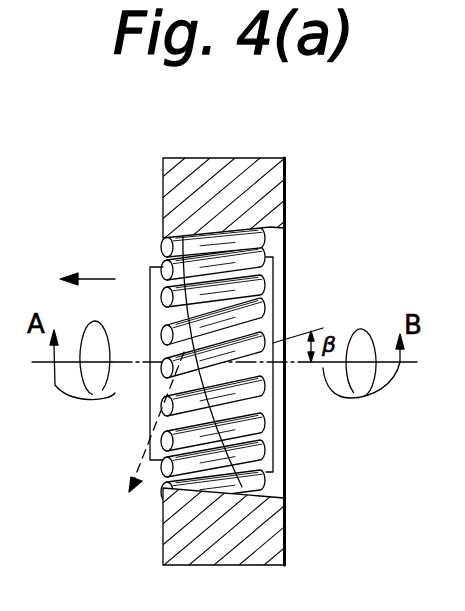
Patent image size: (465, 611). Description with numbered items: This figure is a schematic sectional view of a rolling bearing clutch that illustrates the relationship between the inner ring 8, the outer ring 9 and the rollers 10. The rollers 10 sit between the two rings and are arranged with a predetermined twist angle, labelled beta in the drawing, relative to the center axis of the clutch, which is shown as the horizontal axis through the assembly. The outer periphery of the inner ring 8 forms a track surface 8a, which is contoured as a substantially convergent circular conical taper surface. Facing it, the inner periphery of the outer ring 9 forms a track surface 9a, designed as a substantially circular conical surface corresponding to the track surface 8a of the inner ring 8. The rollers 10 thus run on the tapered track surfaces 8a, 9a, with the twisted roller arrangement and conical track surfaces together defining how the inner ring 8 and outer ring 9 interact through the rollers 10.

The inner ring 8 is at (160, 292).
The track surface 8a is at (266, 329).
The outer ring 9 is at (176, 189).
The track surface 9a is at (268, 240).
The rollers 10 is at (166, 248).